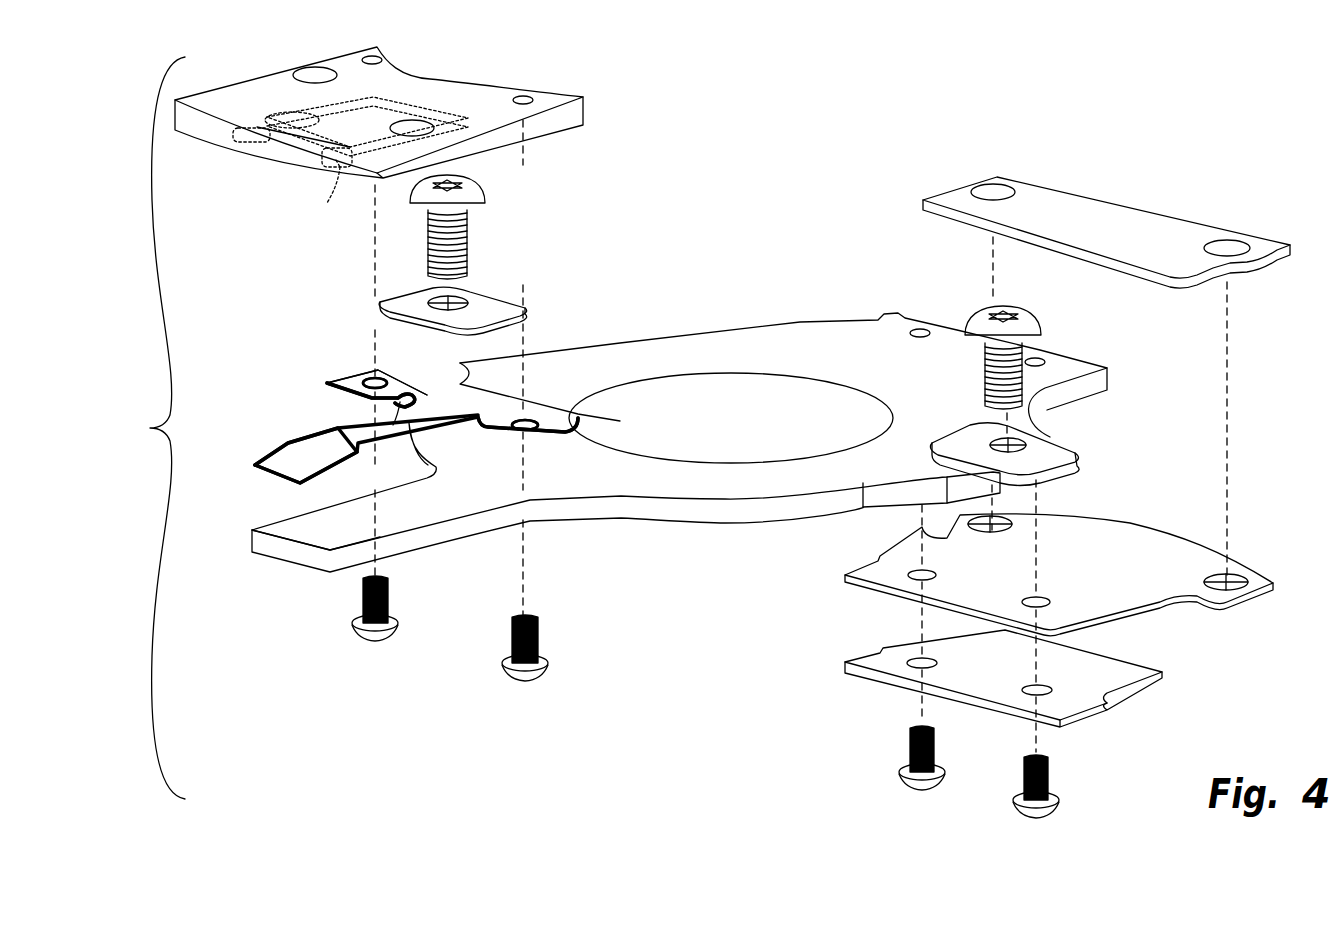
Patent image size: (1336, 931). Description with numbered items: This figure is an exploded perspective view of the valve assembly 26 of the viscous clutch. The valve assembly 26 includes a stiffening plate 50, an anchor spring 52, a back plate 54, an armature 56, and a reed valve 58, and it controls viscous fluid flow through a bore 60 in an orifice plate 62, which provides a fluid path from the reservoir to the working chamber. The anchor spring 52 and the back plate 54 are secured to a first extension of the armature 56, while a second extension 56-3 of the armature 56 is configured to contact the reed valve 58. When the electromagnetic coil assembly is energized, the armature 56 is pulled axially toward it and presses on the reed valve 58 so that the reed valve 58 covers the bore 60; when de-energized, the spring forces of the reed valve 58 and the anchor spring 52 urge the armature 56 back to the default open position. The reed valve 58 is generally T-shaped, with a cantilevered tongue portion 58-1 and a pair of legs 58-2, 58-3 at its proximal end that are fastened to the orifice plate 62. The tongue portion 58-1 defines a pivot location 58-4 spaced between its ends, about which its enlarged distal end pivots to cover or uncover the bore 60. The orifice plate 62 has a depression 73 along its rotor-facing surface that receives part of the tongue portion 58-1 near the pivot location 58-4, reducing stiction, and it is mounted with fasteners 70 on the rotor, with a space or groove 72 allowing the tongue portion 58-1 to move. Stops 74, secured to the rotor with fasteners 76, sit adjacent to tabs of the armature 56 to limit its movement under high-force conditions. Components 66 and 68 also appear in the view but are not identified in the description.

The valve assembly 26 is at (150, 428).
The stiffening plate 50 is at (1150, 230).
The anchor spring 52 is at (1135, 535).
The back plate 54 is at (1128, 665).
The armature 56 is at (708, 318).
The second extension 56-3 is at (290, 525).
The reed valve 58 is at (333, 420).
The tongue portion 58-1 is at (275, 465).
The leg 58-2 is at (553, 413).
The leg 58-3 is at (350, 383).
The pivot location 58-4 is at (400, 400).
The bore 60 is at (277, 117).
The orifice plate 62 is at (470, 90).
The lower screws 66 is at (1028, 812).
The screws 68 is at (370, 642).
The fasteners 70 is at (484, 310).
The space or groove 72 is at (473, 196).
The depression 73 is at (325, 199).
The stops 74 is at (1063, 455).
The fasteners 76 is at (1032, 325).